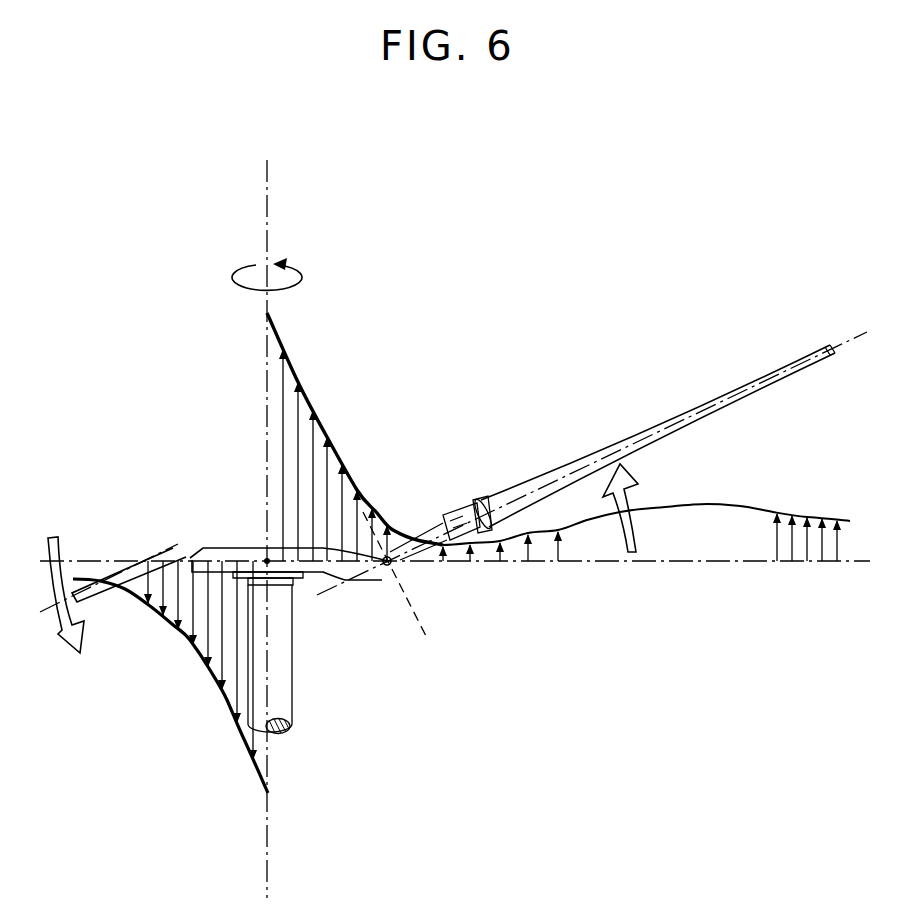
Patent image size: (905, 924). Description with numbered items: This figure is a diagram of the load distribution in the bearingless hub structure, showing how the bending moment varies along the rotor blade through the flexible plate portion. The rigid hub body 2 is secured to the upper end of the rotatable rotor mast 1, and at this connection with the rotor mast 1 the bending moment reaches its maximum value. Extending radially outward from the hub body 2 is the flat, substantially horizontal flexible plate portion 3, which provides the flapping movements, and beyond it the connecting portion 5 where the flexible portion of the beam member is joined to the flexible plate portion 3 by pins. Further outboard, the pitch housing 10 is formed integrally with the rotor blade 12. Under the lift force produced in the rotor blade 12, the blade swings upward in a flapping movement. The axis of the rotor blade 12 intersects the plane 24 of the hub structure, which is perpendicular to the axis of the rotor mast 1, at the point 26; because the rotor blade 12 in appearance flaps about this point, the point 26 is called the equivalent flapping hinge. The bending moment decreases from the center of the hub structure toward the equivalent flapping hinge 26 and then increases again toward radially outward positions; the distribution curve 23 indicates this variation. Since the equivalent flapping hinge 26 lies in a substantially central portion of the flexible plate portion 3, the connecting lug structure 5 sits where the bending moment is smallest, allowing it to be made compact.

The rotor mast 1 is at (287, 698).
The hub body 2 is at (242, 536).
The flexible plate portion 3 is at (398, 540).
The connecting portion 5 is at (456, 506).
The pitch housing 10 is at (573, 462).
The rotor blade 12 is at (792, 355).
The centrifugal force distribution curve 23 is at (300, 369).
The plane of the hub structure 24 is at (718, 564).
The equivalent flapping hinge 26 is at (392, 566).